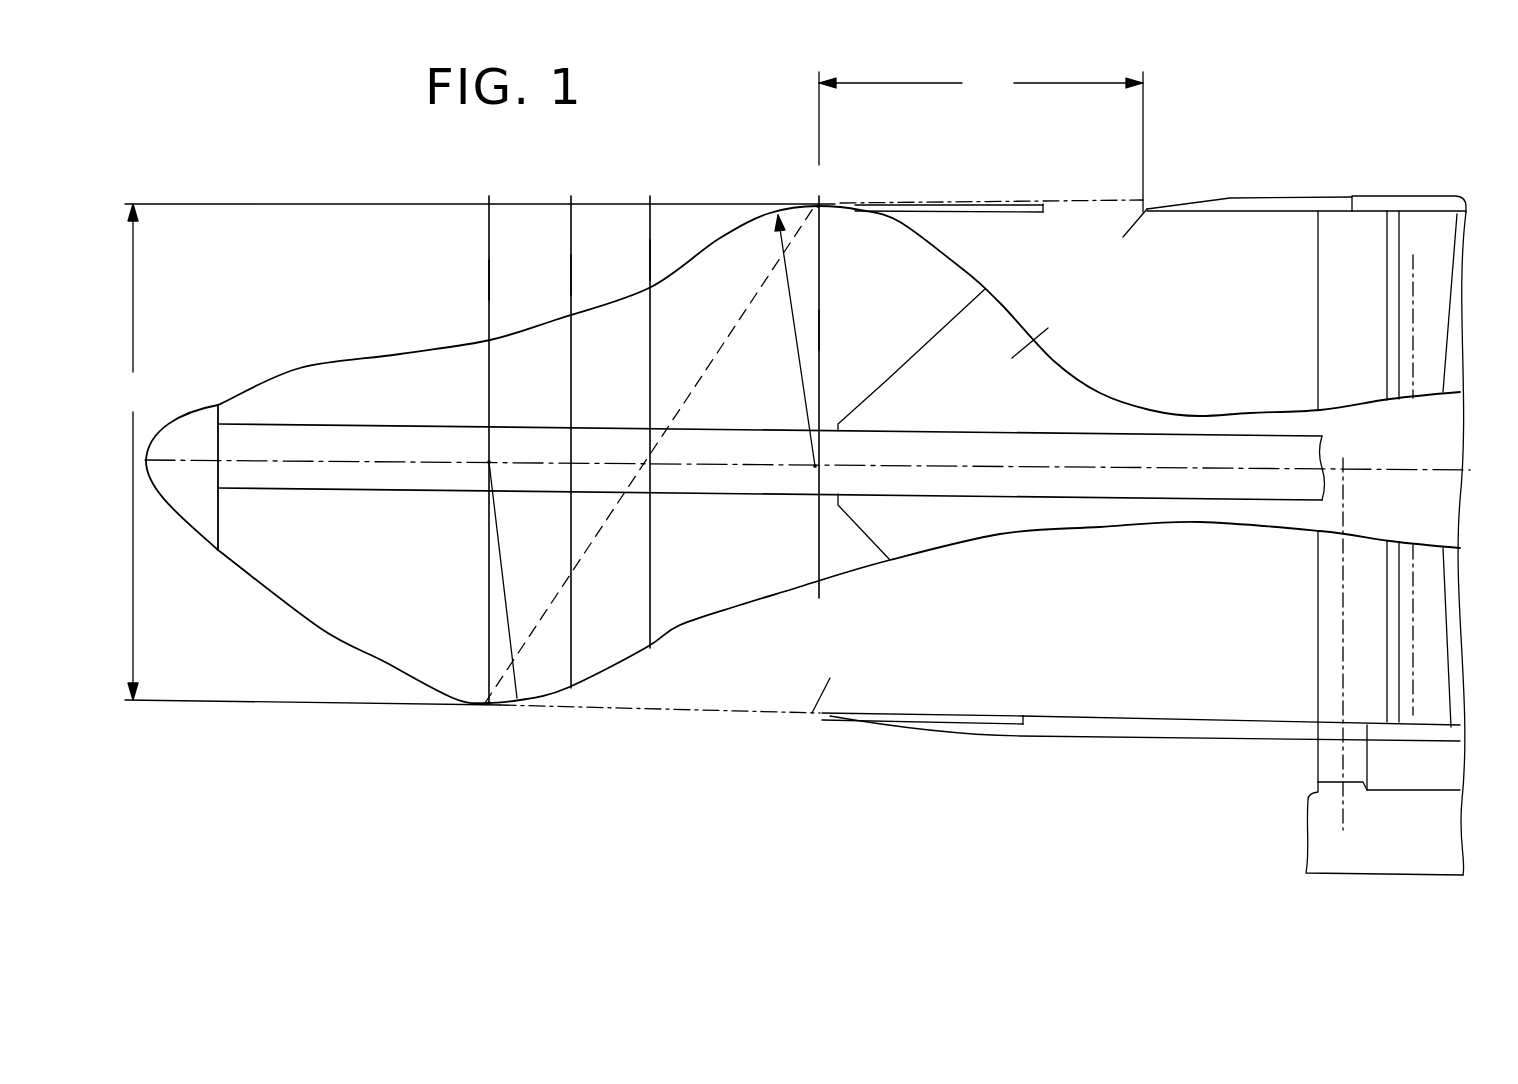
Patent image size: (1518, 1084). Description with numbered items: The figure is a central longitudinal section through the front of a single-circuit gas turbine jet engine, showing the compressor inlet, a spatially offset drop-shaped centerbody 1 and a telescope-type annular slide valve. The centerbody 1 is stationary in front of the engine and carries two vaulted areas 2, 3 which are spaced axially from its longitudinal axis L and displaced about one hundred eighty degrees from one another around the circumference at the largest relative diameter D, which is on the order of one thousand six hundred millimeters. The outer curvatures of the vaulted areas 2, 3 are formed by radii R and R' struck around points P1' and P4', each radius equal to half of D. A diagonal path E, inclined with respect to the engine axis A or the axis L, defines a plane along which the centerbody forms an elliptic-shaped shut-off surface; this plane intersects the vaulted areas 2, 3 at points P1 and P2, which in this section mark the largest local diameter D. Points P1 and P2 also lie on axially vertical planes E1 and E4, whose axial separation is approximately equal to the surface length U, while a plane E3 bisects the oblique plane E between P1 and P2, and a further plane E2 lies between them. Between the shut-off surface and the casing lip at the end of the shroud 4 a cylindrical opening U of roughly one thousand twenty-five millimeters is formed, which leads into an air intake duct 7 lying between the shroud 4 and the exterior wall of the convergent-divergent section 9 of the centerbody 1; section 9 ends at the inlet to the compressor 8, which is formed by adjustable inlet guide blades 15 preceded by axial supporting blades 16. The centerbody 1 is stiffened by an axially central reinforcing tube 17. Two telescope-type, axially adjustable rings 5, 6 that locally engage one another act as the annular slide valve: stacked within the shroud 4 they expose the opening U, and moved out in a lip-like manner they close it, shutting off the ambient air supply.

The centerbody 1 is at (363, 640).
The vaulted area 2 is at (838, 213).
The vaulted area 3 is at (470, 740).
The shroud 4 is at (1385, 196).
The axially adjustable ring 5 is at (1268, 240).
The axially adjustable ring 6 is at (1292, 199).
The air intake duct 7 is at (1180, 356).
The compressor 8 is at (1398, 658).
The section 9 is at (1049, 356).
The adjustable inlet guide blades 15 is at (1432, 688).
The axial supporting blades 16 is at (1325, 700).
The reinforcing tube 17 is at (1008, 500).
The largest relative diameter D is at (470, 458).
The spacing or opening U is at (981, 137).
The longitudinal axis L is at (390, 455).
The engine axis A is at (1405, 470).
The diagonal path E is at (720, 355).
The intersecting plane E1 is at (489, 275).
The blade plane 2 E2 is at (571, 270).
The plane E3 is at (650, 257).
The intersecting plane E4 is at (820, 330).
The radius R is at (777, 340).
The radius R' is at (512, 580).
The point P1 is at (462, 662).
The point P1' is at (455, 495).
The point P2 is at (822, 210).
The point P4' is at (776, 500).